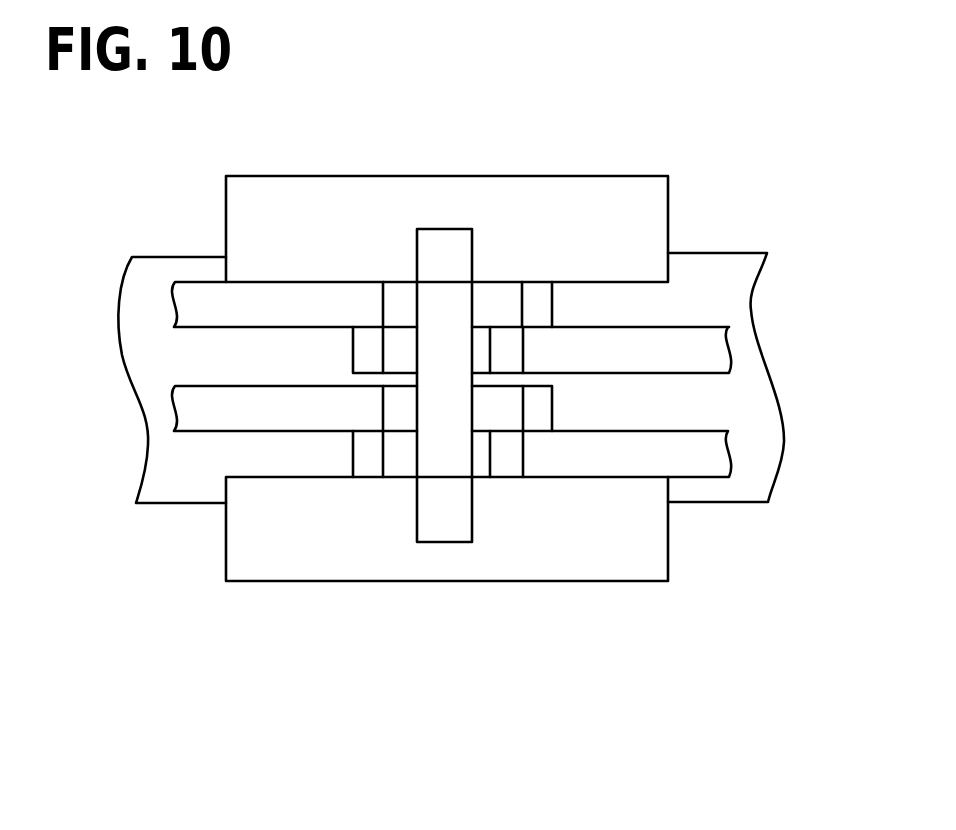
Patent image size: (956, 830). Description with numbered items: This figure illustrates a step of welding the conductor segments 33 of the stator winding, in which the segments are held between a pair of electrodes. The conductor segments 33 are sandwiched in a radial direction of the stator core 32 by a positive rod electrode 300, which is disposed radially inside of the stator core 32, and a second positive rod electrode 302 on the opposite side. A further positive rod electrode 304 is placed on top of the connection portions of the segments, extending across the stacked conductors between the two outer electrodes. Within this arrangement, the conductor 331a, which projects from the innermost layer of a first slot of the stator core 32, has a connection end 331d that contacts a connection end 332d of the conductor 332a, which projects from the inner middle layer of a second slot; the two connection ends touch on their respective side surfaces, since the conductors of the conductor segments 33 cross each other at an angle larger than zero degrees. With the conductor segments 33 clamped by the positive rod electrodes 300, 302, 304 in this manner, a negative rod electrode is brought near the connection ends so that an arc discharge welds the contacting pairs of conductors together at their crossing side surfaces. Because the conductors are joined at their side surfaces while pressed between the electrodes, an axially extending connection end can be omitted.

The stator core 32 is at (762, 463).
The conductor segments 33 is at (293, 300).
The positive rod electrode 300 is at (370, 560).
The positive rod electrode 302 is at (442, 196).
The positive rod electrode 304 is at (447, 520).
The conductor 331a is at (609, 455).
The connection end 331d is at (508, 463).
The conductor 332a is at (272, 410).
The connection end 332d is at (543, 408).